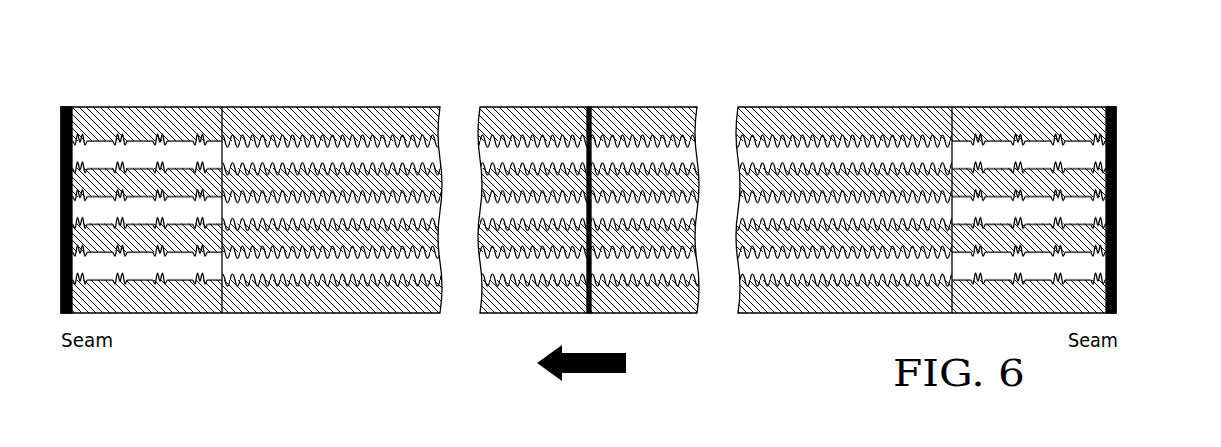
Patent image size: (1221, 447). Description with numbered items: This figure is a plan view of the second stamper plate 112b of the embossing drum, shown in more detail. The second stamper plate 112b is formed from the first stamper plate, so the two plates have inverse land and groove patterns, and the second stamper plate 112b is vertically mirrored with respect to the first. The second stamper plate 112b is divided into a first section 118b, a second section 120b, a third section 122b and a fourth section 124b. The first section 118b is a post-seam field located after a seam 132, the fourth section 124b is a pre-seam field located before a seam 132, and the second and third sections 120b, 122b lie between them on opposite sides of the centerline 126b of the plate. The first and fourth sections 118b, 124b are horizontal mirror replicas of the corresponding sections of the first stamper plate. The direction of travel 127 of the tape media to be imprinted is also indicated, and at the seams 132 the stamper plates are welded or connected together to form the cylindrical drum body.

The seam 132 is at (66, 107).
The first section 118b is at (190, 107).
The second section 120b is at (353, 107).
The centerline 126b is at (589, 107).
The third section 122b is at (657, 107).
The second stamper plate 112b is at (1156, 100).
The fourth section 124b is at (1077, 107).
The direction of travel 127 is at (626, 363).